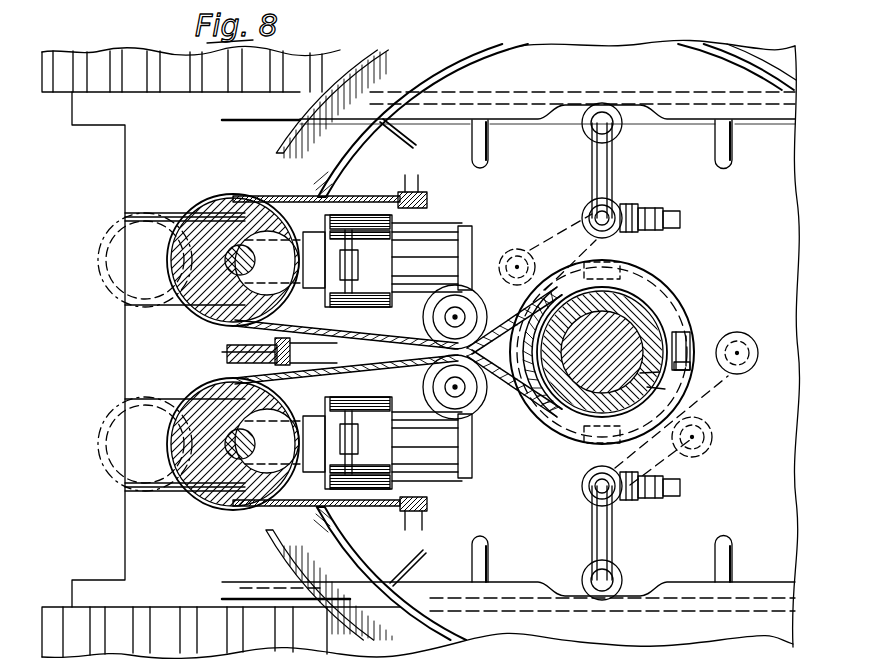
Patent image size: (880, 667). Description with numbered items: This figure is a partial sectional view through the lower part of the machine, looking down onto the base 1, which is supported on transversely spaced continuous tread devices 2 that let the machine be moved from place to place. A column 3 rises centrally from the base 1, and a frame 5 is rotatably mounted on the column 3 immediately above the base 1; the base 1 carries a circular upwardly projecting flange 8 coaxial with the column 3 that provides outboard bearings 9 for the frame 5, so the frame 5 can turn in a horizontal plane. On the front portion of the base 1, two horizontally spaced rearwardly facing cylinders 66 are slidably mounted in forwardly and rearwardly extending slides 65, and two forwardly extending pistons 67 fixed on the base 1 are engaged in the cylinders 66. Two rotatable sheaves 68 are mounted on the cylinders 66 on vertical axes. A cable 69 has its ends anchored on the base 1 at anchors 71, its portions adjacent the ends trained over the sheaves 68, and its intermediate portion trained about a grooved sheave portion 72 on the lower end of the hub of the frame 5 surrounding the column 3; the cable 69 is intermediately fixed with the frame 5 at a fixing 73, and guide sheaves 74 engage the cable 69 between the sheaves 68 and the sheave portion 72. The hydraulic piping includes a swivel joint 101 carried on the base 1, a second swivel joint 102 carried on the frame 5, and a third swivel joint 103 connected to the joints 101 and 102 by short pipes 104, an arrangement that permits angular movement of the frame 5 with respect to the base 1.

The base 1 is at (124, 187).
The continuous tread devices 2 is at (213, 86).
The column 3 is at (660, 372).
The frame 5 is at (665, 389).
The circular upwardly projecting flange 8 is at (400, 580).
The outboard bearings 9 is at (625, 68).
The slides 65 is at (152, 388).
The cylinders 66 is at (402, 180).
The pistons 67 is at (412, 254).
The sheaves 68 is at (228, 205).
The cable 69 is at (350, 197).
The cable anchors 71 is at (428, 198).
The grooved sheave portion 72 is at (650, 283).
The cable fixing 73 is at (697, 340).
The guide sheaves 74 is at (447, 293).
The swivel joint 101 is at (625, 240).
The second swivel joint 102 is at (623, 210).
The third swivel joint 103 is at (620, 130).
The short pipes 104 is at (608, 170).